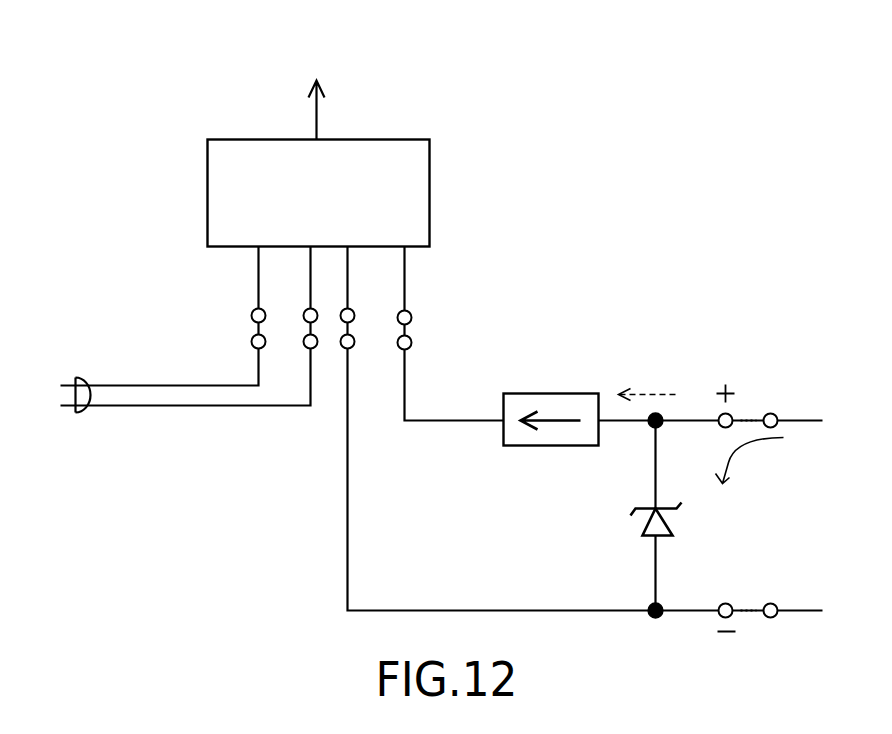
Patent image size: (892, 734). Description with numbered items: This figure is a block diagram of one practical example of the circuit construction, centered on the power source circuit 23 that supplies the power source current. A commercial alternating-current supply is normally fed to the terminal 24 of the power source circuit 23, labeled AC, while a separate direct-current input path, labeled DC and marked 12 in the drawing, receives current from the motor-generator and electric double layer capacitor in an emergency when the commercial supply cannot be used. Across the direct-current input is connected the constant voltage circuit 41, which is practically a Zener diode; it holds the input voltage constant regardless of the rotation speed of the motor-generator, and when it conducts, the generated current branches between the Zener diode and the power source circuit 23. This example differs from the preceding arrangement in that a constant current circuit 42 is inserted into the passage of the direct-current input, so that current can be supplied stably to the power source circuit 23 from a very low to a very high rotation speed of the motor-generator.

The power source circuit 23 is at (433, 143).
The terminal 24 is at (275, 292).
The DC output terminals 12 is at (388, 288).
The constant current circuit 42 is at (560, 393).
The constant voltage circuit 41 is at (668, 520).